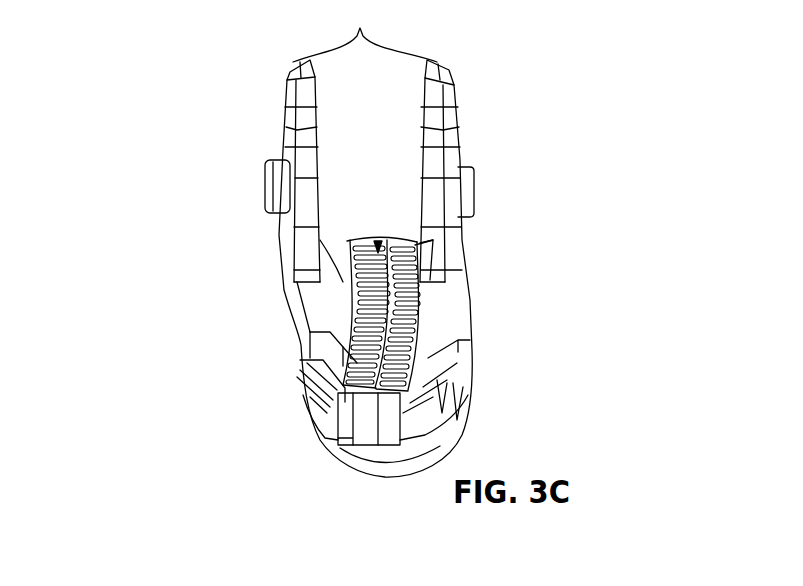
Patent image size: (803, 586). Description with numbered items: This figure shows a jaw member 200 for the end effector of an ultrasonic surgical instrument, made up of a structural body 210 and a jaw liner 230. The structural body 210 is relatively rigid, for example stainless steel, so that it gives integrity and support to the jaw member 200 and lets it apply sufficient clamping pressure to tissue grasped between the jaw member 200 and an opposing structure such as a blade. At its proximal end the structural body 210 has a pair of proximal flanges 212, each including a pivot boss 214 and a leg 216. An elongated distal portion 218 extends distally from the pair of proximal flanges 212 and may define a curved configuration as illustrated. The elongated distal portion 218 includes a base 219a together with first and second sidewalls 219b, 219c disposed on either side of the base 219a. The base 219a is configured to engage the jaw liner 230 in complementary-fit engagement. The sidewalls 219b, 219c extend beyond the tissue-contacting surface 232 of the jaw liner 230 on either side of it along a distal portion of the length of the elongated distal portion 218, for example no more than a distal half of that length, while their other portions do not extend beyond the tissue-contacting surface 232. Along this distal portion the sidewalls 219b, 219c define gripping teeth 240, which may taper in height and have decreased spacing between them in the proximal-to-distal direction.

The jaw member 200 is at (140, 209).
The structural body 210 is at (463, 322).
The proximal flanges 212 is at (288, 86).
The pivot boss 214 is at (266, 183).
The leg 216 is at (365, 31).
The elongated distal portion 218 is at (316, 303).
The base 219a is at (361, 447).
The first sidewall 219b is at (313, 413).
The second sidewall 219c is at (438, 427).
The jaw liner 230 is at (423, 280).
The tissue-contacting surface 232 is at (378, 245).
The gripping teeth 240 is at (305, 368).